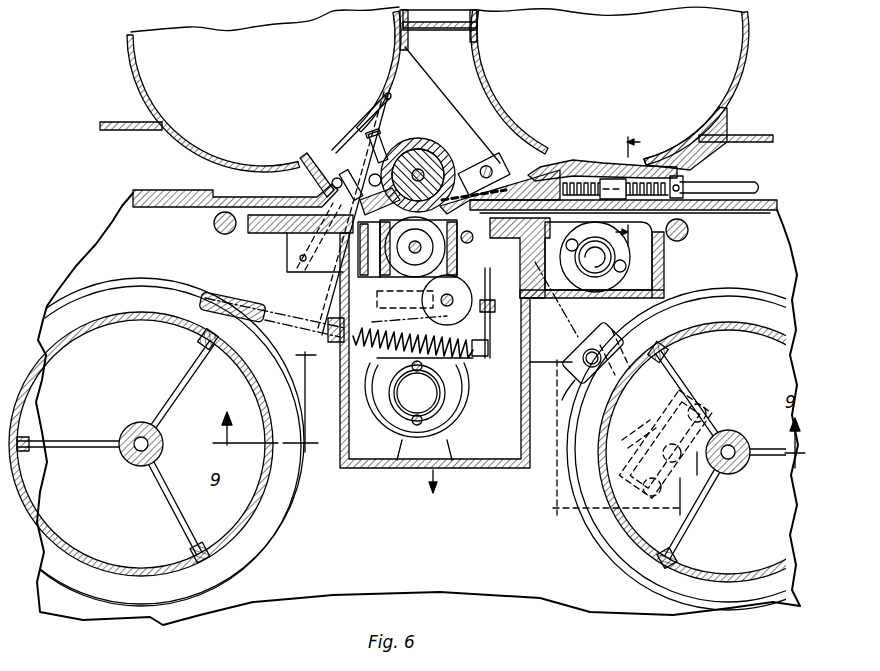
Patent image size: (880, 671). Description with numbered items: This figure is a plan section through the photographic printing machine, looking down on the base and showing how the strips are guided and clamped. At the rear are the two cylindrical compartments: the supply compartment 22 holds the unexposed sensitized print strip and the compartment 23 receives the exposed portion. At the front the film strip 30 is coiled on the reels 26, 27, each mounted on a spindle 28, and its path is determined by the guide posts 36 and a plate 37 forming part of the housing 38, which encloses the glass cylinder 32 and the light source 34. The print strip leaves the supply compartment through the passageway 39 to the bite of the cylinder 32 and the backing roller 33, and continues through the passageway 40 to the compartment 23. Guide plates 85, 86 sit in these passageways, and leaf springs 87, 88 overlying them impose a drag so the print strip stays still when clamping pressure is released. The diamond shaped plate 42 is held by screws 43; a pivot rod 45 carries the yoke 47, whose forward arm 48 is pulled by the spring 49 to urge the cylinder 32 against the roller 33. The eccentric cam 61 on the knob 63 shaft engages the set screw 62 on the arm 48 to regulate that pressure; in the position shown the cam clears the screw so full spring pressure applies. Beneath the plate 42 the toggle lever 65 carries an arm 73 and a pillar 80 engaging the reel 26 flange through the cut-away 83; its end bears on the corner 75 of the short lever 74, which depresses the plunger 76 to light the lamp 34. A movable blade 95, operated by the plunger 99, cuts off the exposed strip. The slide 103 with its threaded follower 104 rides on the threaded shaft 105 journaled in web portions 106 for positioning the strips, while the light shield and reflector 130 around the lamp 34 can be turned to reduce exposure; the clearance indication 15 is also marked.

The supply compartment 22 is at (628, 57).
The compartment 23 is at (272, 74).
The film reel 26 is at (640, 540).
The reel 27 is at (157, 442).
The spindle 28 is at (163, 445).
The film strip 30 is at (212, 223).
The glass cylinder 32 is at (418, 274).
The backing roller 33 is at (420, 138).
The light source 34 is at (428, 401).
The guide post 36 is at (690, 231).
The plate 37 is at (260, 236).
The housing 38 is at (378, 470).
The passageway 39 is at (548, 165).
The passageway 40 is at (320, 152).
The diamond shaped plate 42 is at (450, 455).
The screw 43 is at (412, 68).
The pivot rod 45 is at (466, 227).
The yoke 47 is at (525, 246).
The arm 48 is at (491, 331).
The spring 49 is at (413, 356).
The cam 61 is at (413, 336).
The set screw 62 is at (471, 339).
The control knob 63 is at (398, 322).
The toggle lever 65 is at (587, 336).
The arm 73 is at (380, 304).
The short lever 74 is at (630, 420).
The corner 75 is at (636, 402).
The plunger 76 is at (633, 443).
The pillar 80 is at (576, 384).
The cut away 83 is at (616, 334).
The guide plate 85 is at (500, 183).
The guide plate 86 is at (338, 205).
The leaf spring 87 is at (474, 178).
The leaf spring 88 is at (371, 152).
The movable blade 95 is at (361, 123).
The plunger 99 is at (295, 265).
The slide 103 is at (630, 257).
The internally threaded follower 104 is at (612, 163).
The threaded shaft 105 is at (758, 178).
The web portion 106 is at (690, 172).
The combination light shield and reflector 130 is at (469, 414).
The gap 15 is at (643, 190).